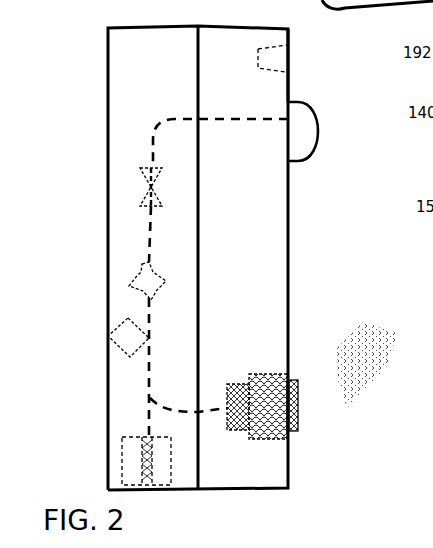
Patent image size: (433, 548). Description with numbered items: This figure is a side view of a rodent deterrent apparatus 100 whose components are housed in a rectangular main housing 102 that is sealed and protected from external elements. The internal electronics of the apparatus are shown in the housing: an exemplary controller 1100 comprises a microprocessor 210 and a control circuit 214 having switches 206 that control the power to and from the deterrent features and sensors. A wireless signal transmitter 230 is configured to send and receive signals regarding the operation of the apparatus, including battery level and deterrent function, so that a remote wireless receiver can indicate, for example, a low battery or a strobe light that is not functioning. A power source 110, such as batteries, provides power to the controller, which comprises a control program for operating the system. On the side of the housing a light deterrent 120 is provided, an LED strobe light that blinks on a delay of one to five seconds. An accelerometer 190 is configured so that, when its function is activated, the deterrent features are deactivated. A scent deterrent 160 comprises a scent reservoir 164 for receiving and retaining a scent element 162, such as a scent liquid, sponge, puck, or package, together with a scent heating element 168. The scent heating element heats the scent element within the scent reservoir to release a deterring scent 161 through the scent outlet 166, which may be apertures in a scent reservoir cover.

The rodent deterrent apparatus 100 is at (293, 259).
The main housing 102 is at (282, 97).
The power source 110 is at (128, 447).
The light deterrent 120 is at (307, 140).
The scent deterrent 160 is at (302, 385).
The deterring scent 161 is at (357, 332).
The scent element 162 is at (291, 434).
The scent reservoir 164 is at (268, 376).
The scent outlet 166 is at (298, 410).
The scent heating element 168 is at (233, 383).
The accelerometer 190 is at (277, 57).
The switches 206 is at (140, 169).
The microprocessor 210 is at (150, 284).
The control circuit 214 is at (155, 130).
The wireless signal transmitter 230 is at (133, 339).
The controller 1100 is at (145, 269).